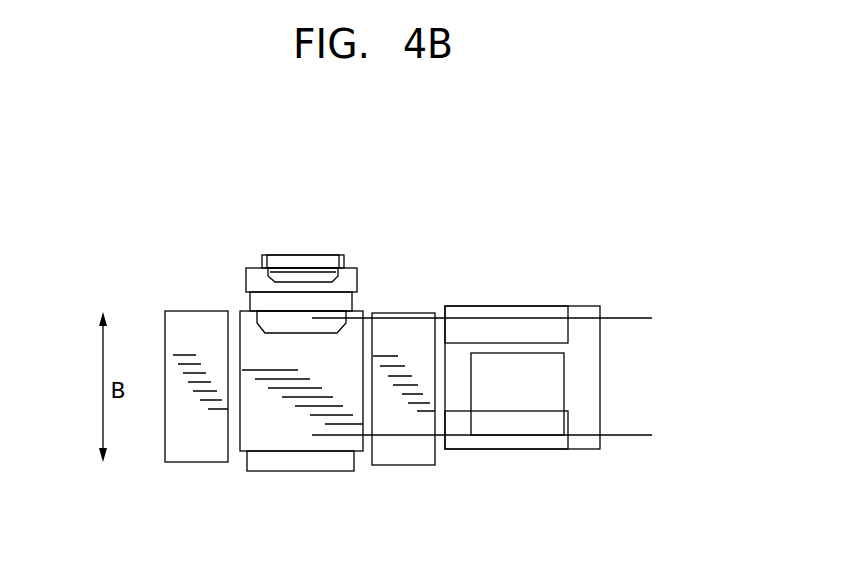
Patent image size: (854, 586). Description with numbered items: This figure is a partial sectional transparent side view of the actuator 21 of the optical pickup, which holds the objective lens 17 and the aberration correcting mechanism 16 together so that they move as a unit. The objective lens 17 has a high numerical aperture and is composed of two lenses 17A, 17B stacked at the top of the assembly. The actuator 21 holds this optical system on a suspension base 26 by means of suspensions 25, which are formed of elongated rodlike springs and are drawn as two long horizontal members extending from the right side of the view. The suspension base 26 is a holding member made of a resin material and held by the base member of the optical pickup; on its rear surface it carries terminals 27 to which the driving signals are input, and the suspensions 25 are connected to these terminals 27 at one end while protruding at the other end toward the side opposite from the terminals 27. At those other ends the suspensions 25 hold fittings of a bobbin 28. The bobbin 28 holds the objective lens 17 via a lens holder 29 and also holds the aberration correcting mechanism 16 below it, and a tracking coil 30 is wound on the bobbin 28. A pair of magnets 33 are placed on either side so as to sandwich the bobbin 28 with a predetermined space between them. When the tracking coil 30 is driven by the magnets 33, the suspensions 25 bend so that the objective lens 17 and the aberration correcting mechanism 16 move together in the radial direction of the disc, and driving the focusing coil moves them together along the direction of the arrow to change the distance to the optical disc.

The aberration correcting mechanism 16 is at (288, 465).
The objective lens 17 is at (327, 207).
The lens 17A is at (287, 263).
The lens 17B is at (326, 233).
The actuator 21 is at (582, 165).
The suspensions 25 is at (517, 320).
The suspension base 26 is at (545, 402).
The terminals 27 is at (640, 318).
The bobbin 28 is at (363, 327).
The lens holder 29 is at (247, 280).
The tracking coil 30 is at (252, 350).
The magnets 33 is at (182, 340).